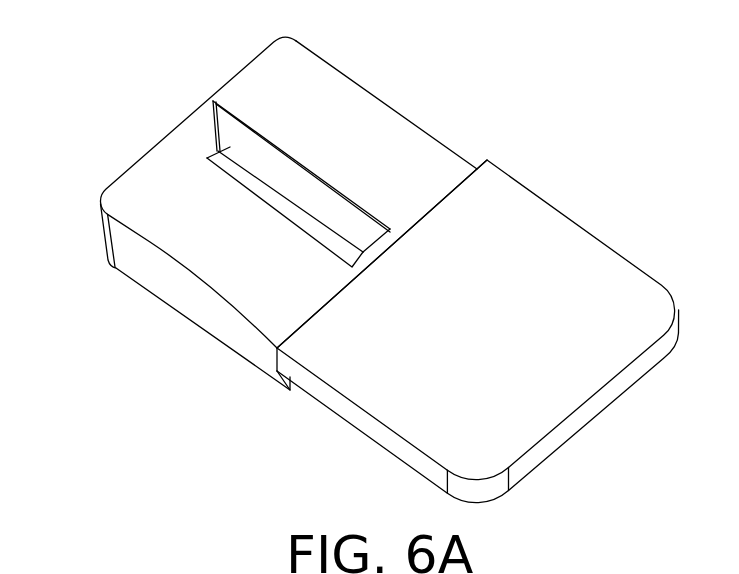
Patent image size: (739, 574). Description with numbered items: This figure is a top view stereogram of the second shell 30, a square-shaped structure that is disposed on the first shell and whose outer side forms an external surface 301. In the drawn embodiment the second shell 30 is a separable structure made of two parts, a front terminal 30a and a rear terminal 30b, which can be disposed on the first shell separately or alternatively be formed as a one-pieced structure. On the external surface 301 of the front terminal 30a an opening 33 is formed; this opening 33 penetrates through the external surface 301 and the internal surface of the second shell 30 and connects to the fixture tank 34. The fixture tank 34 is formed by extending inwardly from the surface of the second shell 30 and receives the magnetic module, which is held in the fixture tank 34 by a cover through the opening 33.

The second shell 30 is at (63, 48).
The front terminal 30a is at (343, 113).
The rear terminal 30b is at (540, 408).
The external surface 301 is at (437, 177).
The opening 33 is at (213, 101).
The fixture tank 34 is at (222, 153).